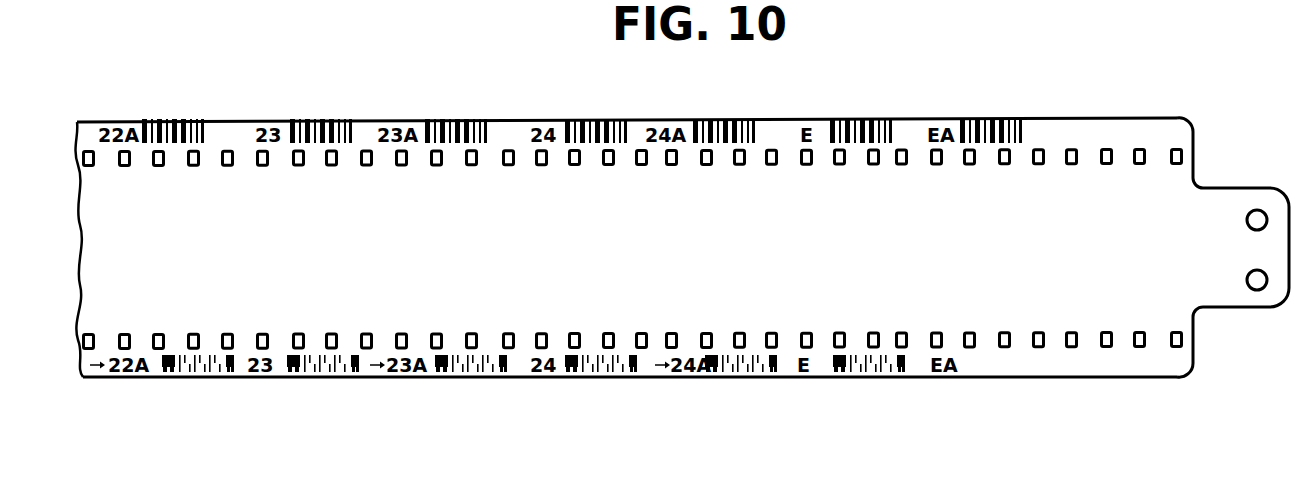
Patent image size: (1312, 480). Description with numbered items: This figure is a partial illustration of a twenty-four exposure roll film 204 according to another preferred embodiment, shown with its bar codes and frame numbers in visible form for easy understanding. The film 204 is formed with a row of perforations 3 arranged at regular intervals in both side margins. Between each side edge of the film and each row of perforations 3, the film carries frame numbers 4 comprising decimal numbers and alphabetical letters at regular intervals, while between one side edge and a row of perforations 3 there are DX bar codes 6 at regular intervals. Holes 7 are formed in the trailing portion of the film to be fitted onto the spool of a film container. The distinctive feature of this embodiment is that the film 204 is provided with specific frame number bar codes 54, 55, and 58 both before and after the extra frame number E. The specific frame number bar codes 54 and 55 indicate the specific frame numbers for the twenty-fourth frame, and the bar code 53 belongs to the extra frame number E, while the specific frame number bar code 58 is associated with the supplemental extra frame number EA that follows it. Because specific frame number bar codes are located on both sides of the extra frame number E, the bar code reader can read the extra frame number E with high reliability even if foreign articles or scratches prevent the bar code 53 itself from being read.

The 24-exposure roll film 204 is at (682, 235).
The frame numbers 4 is at (407, 119).
The perforations 3 is at (508, 150).
The specific frame number bar code 54 is at (628, 112).
The specific frame number bar code 55 is at (755, 112).
The bar code of extra frame number 53 is at (890, 112).
The specific frame number bar code 58 is at (1017, 112).
The DX bar codes 6 is at (642, 383).
The holes 7 is at (1257, 210).